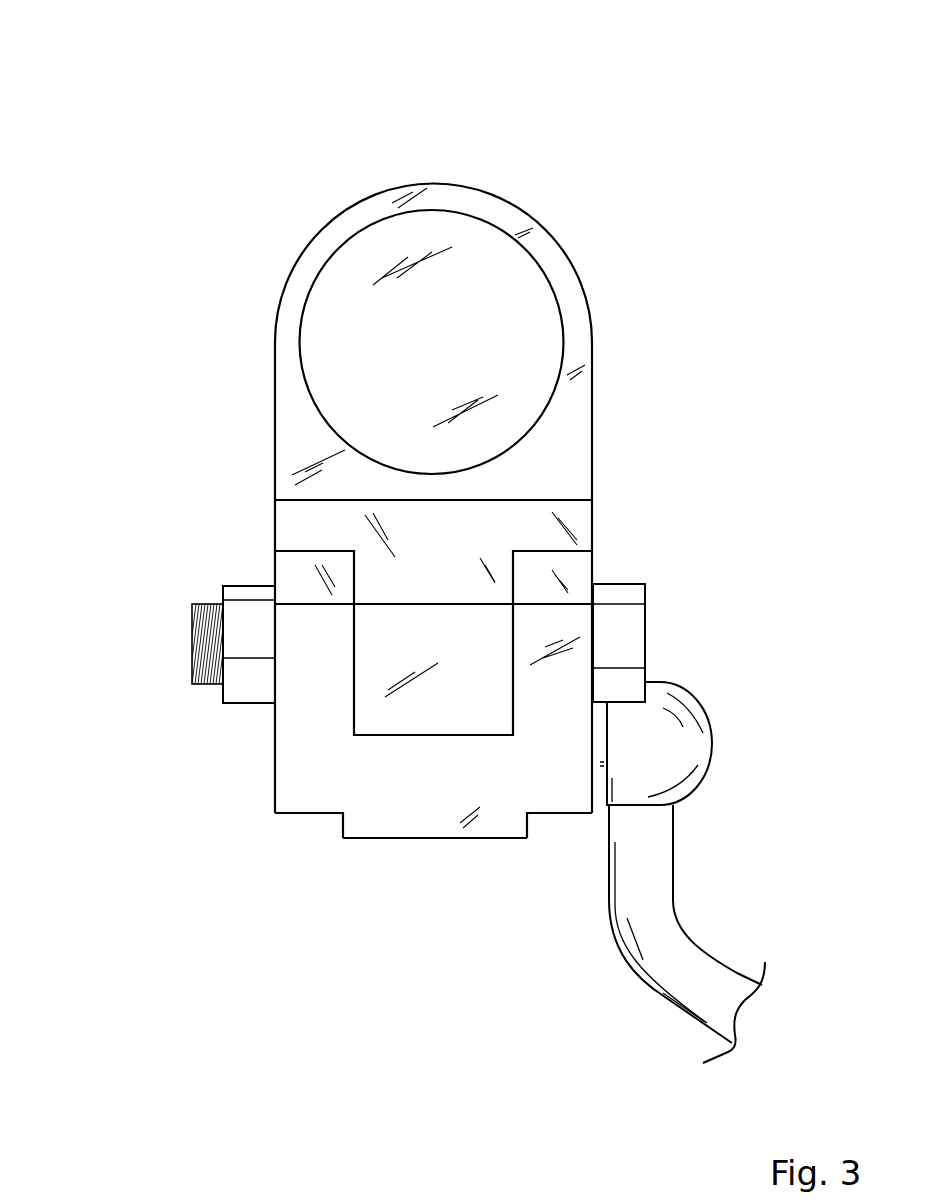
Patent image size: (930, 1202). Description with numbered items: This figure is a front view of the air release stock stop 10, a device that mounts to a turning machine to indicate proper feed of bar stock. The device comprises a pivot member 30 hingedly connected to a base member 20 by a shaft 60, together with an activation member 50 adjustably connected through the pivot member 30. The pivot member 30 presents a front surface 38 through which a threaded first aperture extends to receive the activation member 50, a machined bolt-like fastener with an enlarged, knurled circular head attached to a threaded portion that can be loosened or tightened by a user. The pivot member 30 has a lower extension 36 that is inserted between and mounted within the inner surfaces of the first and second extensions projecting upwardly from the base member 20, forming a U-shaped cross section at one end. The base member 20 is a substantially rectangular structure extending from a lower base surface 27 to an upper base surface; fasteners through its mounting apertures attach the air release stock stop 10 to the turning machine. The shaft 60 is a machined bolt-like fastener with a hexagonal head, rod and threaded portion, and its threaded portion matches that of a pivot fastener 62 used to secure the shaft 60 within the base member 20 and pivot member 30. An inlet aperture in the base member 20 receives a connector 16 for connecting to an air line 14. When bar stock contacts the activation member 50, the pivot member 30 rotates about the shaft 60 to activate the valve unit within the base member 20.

The air release stock stop 10 is at (580, 132).
The pivot member 30 is at (583, 249).
The activation member 50 is at (372, 256).
The front surface 38 is at (568, 429).
The lower extension 36 is at (398, 710).
The lower base surface 27 is at (400, 838).
The base member 20 is at (433, 858).
The pivot fastener 62 is at (248, 683).
The shaft 60 is at (657, 618).
The connector 16 is at (690, 715).
The air line 14 is at (663, 927).